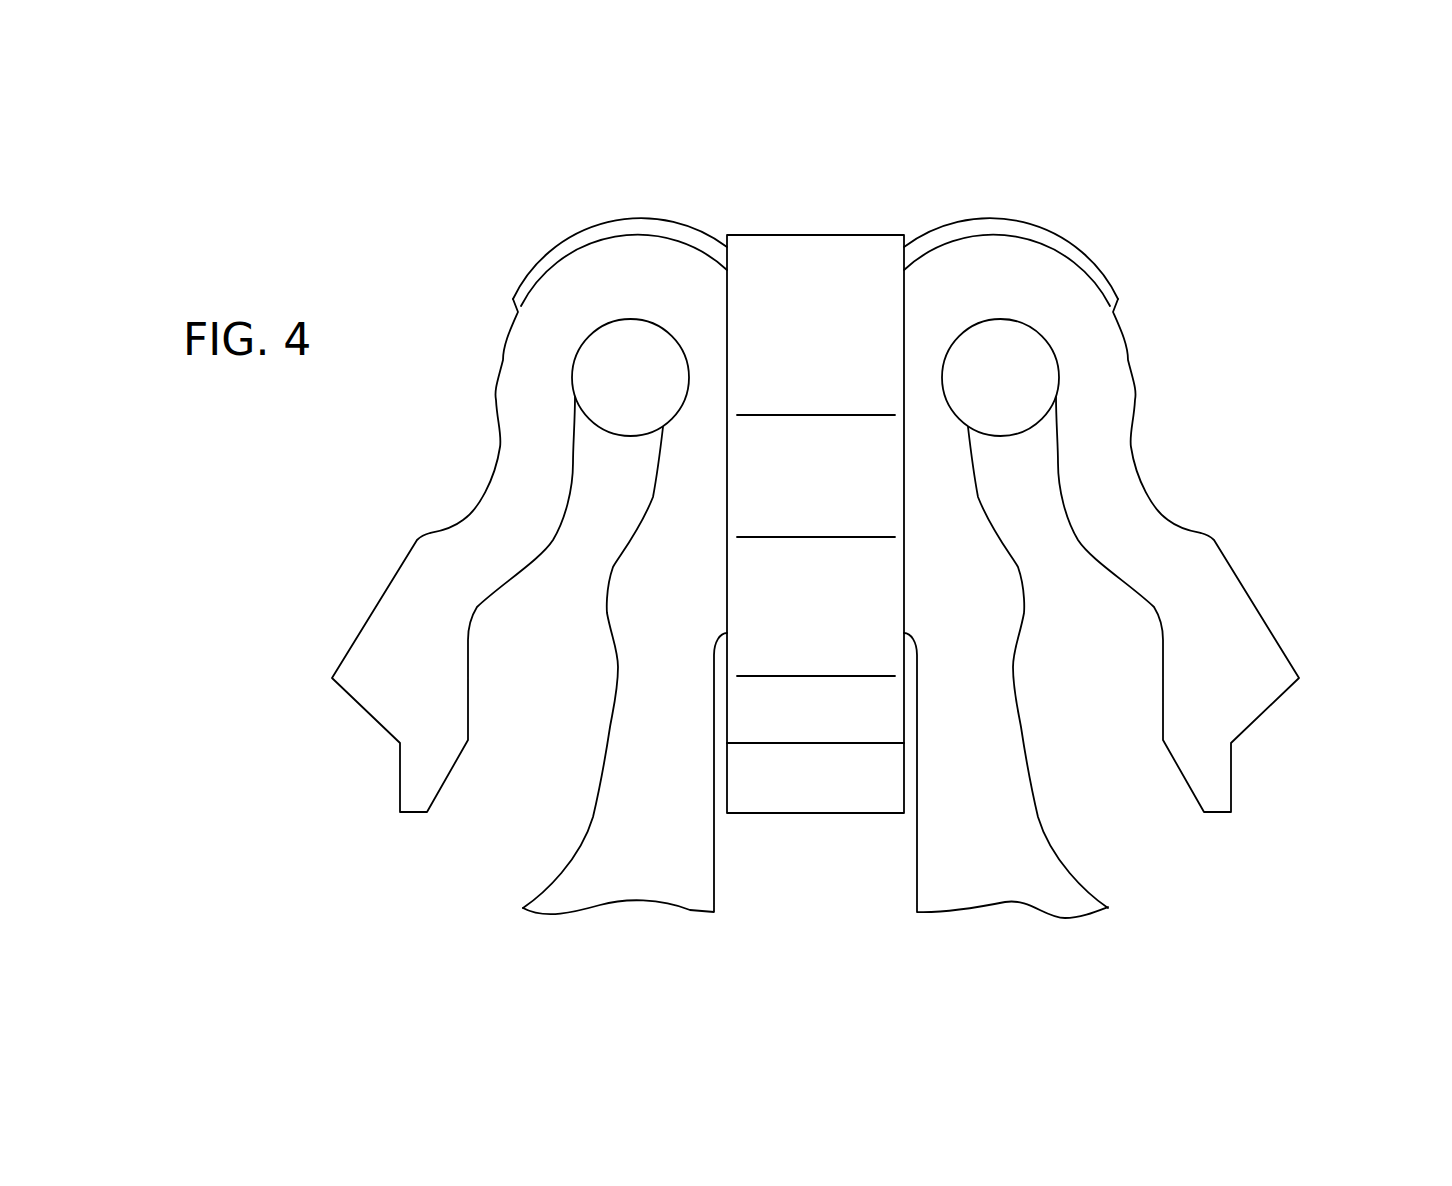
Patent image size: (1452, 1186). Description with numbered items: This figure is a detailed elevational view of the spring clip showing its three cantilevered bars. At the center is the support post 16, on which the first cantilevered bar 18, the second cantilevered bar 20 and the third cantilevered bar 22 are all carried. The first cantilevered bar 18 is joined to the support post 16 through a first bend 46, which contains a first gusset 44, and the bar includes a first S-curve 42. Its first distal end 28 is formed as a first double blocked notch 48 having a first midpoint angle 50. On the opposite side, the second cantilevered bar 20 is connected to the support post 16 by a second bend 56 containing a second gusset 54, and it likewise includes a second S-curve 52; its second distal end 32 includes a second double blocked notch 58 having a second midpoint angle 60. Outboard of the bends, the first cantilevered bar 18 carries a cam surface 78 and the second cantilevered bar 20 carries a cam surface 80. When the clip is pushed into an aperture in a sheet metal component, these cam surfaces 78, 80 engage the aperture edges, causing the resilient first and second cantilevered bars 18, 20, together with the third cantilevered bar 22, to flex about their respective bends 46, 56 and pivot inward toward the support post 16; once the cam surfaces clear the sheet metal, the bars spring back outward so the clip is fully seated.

The support post 16 is at (665, 738).
The first cantilevered bar 18 is at (1102, 417).
The second cantilevered bar 20 is at (527, 352).
The third cantilevered bar 22 is at (828, 343).
The first distal end 28 is at (1284, 676).
The second distal end 32 is at (332, 678).
The first S-curve 42 is at (1162, 438).
The first gusset 44 is at (1002, 383).
The first bend 46 is at (998, 317).
The first double blocked notch 48 is at (1253, 722).
The first midpoint angle 50 is at (1243, 748).
The second S-curve 52 is at (462, 409).
The second gusset 54 is at (618, 397).
The second bend 56 is at (627, 317).
The second double blocked notch 58 is at (372, 720).
The second midpoint angle 60 is at (395, 745).
The cam surface 78 is at (1260, 600).
The cam surface 80 is at (367, 610).